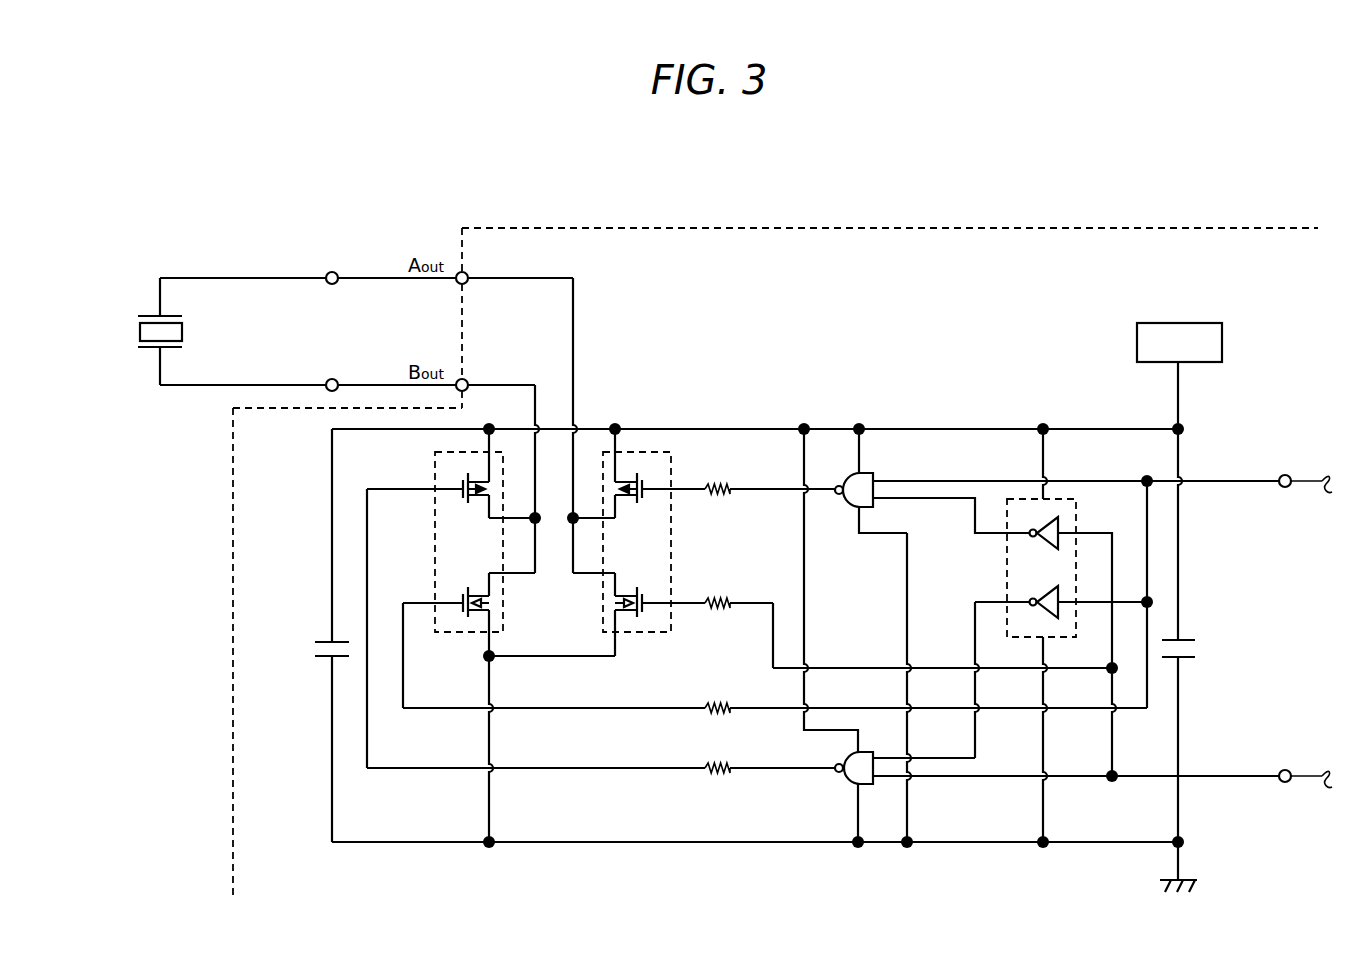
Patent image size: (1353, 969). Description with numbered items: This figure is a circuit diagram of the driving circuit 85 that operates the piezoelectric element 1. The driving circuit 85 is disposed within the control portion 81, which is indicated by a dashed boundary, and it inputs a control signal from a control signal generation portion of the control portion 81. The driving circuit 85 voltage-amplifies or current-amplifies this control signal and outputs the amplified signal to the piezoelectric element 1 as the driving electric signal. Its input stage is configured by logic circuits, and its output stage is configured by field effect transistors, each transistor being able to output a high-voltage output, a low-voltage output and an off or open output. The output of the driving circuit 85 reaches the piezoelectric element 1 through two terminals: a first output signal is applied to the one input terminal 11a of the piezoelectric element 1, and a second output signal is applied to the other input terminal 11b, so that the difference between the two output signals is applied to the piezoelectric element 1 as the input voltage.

The piezoelectric element 1 is at (140, 333).
The one input terminal 11a is at (332, 272).
The other input terminal 11b is at (332, 379).
The control portion 81 is at (1150, 227).
The driving circuit 85 is at (1031, 335).